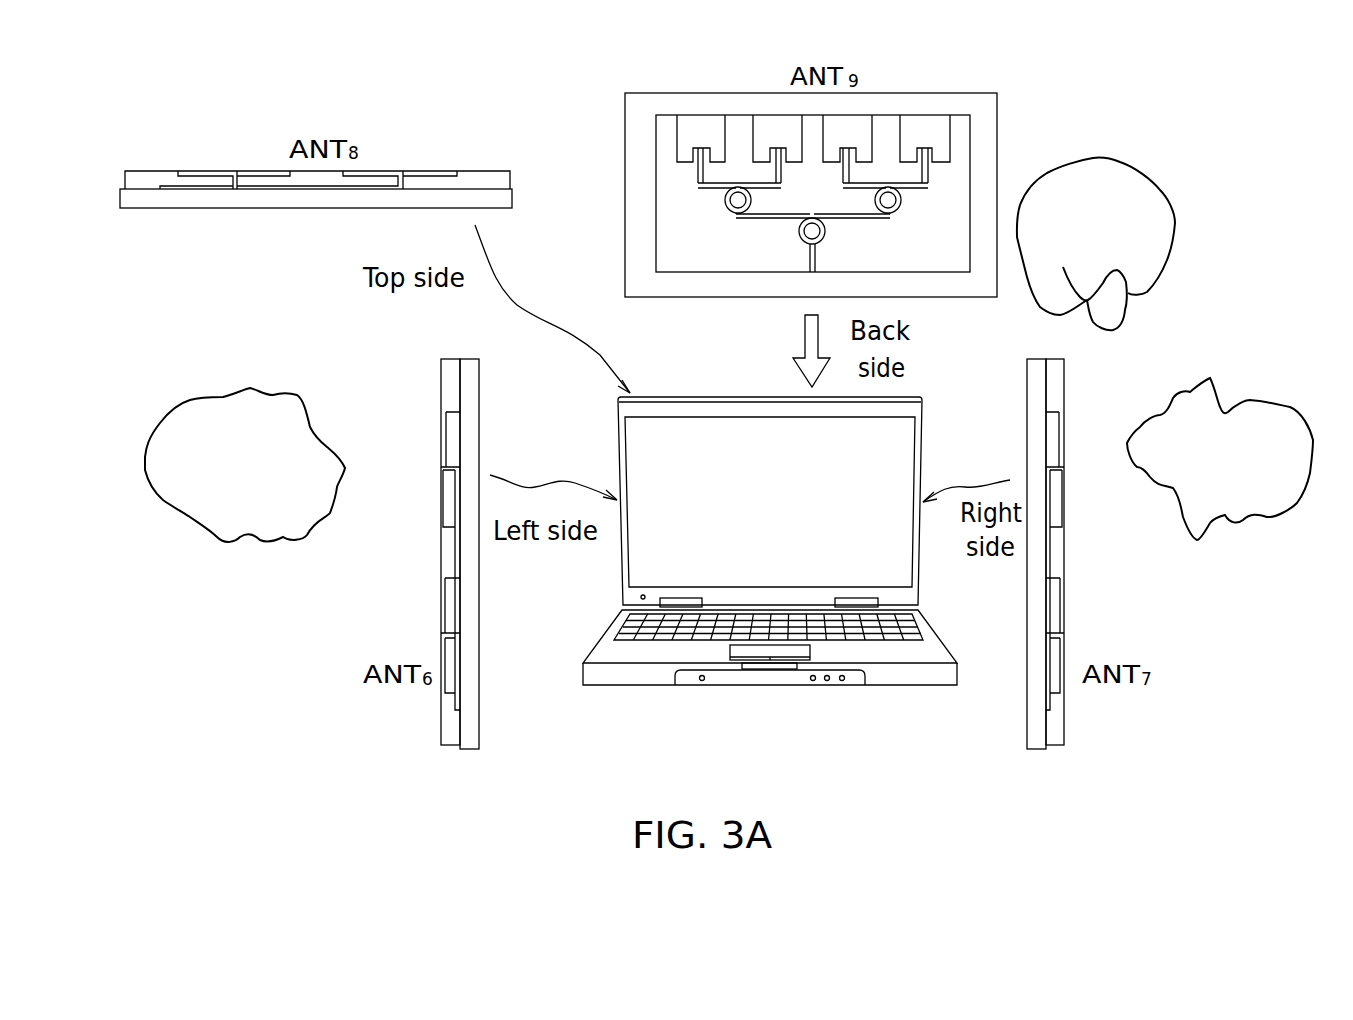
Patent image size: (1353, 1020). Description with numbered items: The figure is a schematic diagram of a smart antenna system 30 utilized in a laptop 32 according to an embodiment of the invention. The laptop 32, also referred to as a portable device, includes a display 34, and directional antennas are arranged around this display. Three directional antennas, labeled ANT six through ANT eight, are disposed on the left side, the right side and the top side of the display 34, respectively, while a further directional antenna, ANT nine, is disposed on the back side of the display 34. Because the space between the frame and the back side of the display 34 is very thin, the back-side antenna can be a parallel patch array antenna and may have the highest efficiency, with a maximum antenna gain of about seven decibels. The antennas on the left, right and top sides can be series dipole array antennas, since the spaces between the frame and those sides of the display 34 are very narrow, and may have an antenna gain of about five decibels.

The smart antenna system 30 is at (1212, 123).
The laptop 32 is at (925, 618).
The display 34 is at (880, 460).